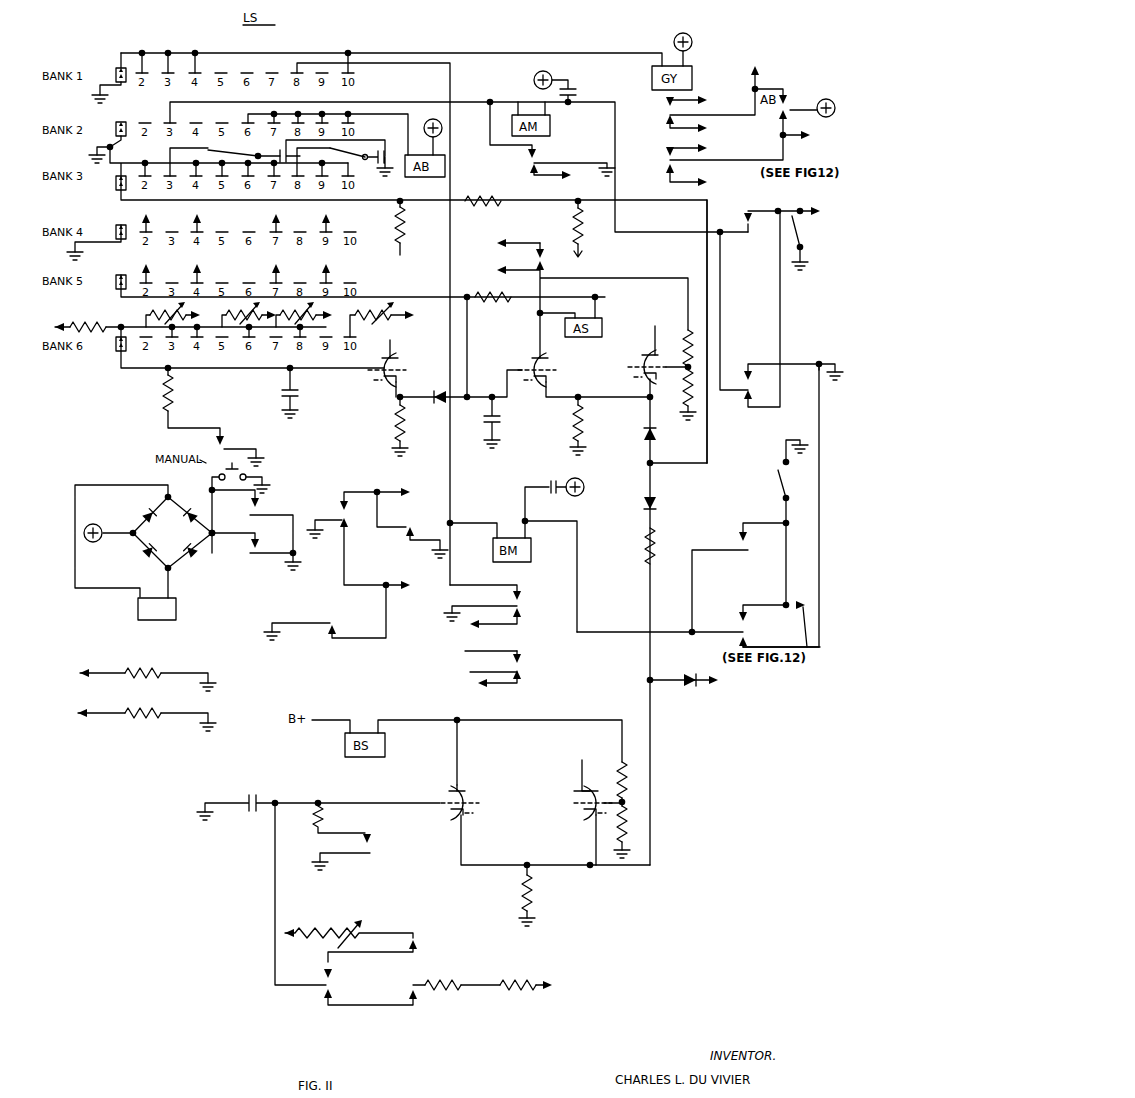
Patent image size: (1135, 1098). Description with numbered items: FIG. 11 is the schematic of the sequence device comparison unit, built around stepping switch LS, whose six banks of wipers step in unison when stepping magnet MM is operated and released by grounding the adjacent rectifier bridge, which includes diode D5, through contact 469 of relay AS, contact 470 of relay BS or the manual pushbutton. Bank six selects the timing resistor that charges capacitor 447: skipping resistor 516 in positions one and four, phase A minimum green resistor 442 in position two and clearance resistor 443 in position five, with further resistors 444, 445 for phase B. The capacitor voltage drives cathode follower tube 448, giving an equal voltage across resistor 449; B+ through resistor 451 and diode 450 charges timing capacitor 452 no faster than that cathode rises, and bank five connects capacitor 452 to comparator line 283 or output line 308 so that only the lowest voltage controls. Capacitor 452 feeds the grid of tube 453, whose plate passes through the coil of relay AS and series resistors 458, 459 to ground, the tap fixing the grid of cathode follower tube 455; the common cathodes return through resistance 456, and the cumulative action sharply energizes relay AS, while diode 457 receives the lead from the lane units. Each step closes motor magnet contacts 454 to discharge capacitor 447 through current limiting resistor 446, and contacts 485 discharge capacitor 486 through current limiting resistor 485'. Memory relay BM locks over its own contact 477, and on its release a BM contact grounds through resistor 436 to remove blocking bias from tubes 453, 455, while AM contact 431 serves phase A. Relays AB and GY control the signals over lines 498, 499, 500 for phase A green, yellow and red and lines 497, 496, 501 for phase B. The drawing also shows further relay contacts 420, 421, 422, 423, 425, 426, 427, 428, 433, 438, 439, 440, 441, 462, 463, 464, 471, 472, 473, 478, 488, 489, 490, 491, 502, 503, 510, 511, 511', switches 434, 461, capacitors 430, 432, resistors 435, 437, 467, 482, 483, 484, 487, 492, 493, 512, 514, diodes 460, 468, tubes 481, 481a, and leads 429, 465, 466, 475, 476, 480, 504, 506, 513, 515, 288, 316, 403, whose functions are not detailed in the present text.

The bank 1 wiper switch 420 is at (138, 87).
The AM relay contact 421 is at (538, 159).
The relay contact 422 is at (527, 170).
The relay contact 423 is at (665, 111).
The AB relay contact 425 is at (790, 100).
The relay contact 426 is at (789, 111).
The relay contact 427 is at (664, 159).
The relay contact 428 is at (682, 170).
The lead 429 is at (566, 176).
The capacitor 430 is at (272, 148).
The AM contact 431 is at (335, 150).
The capacitor 432 is at (365, 168).
The BS relay contact 433 is at (744, 220).
The switch S1 arm 434 is at (812, 242).
The resistor 435 is at (408, 224).
The resistor 436 is at (476, 210).
The resistor 437 is at (572, 212).
The bank 4 contact 438 is at (153, 214).
The bank 4 contact 439 is at (204, 214).
The bank 4 contact 440 is at (283, 214).
The bank 4 contact 441 is at (333, 214).
The phase A minimum green resistor 442 is at (140, 320).
The resistor 443 is at (250, 306).
The potentiometer 444 is at (313, 309).
The potentiometer 445 is at (382, 326).
The current limiting resistor 446 is at (178, 400).
The capacitor 447 is at (298, 396).
The tube 448 is at (372, 374).
The resistor 449 is at (410, 420).
The diode 450 is at (441, 391).
The resistor 451 is at (545, 338).
The timing condenser 452 is at (505, 410).
The tube 453 is at (533, 352).
The motor magnet contacts 454 is at (232, 440).
The tube 455 is at (632, 354).
The resistance 456 is at (590, 420).
The diode 457 is at (640, 432).
The resistor 458 is at (684, 342).
The resistor 459 is at (685, 406).
The diode D3 460 is at (659, 496).
The switch S2 461 is at (792, 478).
The PR relay contact 462 is at (752, 549).
The GY relay contact 463 is at (738, 622).
The relay contact 464 is at (750, 645).
The lead 465 is at (790, 190).
The lead 466 is at (808, 617).
The resistor 467 is at (642, 543).
The diode D4 468 is at (702, 696).
The contact of relay AS 469 is at (263, 508).
The contact of relay BS 470 is at (255, 556).
The relay contact 471 is at (350, 507).
The AB relay contact 472 is at (348, 526).
The PR relay contact 473 is at (338, 624).
The lead 475 is at (409, 492).
The lead 476 is at (405, 589).
The contact of relay BM 477 is at (522, 597).
The relay contact 478 is at (522, 611).
The lead 480 is at (472, 630).
The vacuum tube 481 is at (603, 788).
The vacuum tube 481a is at (470, 790).
The resistor 482 is at (634, 778).
The resistor 483 is at (630, 838).
The resistor 484 is at (532, 892).
The contacts 485 is at (360, 853).
The current limiting resistor 485' is at (342, 826).
The capacitor 486 is at (256, 797).
The potentiometer 487 is at (363, 922).
The AM relay contact 488 is at (420, 942).
The AB relay contact 489 is at (337, 974).
The relay contact 490 is at (337, 990).
The BM relay contact 491 is at (400, 987).
The resistor 492 is at (456, 980).
The resistor 493 is at (518, 996).
The line 496 is at (717, 100).
The line 497 is at (720, 128).
The line 498 is at (718, 148).
The line 499 is at (717, 182).
The line 500 is at (726, 80).
The line 501 is at (819, 135).
The GY relay contact 502 is at (752, 380).
The relay contact 503 is at (745, 394).
The lead 504 is at (728, 681).
The lead 506 is at (712, 450).
The relay contact 510 is at (544, 254).
The relay contact 511 is at (533, 658).
The relay contact 511' is at (583, 292).
The resistor 512 is at (142, 665).
The lead 513 is at (74, 673).
The resistor 514 is at (142, 705).
The lead 515 is at (70, 713).
The skipping resistor 516 is at (92, 323).
The comparator circuit line 283 is at (288, 261).
The lead 288 is at (455, 435).
The output line 308 is at (338, 261).
The lead 316 is at (412, 523).
The lead 403 is at (418, 488).
The bridge rectifier diode D5 is at (145, 552).